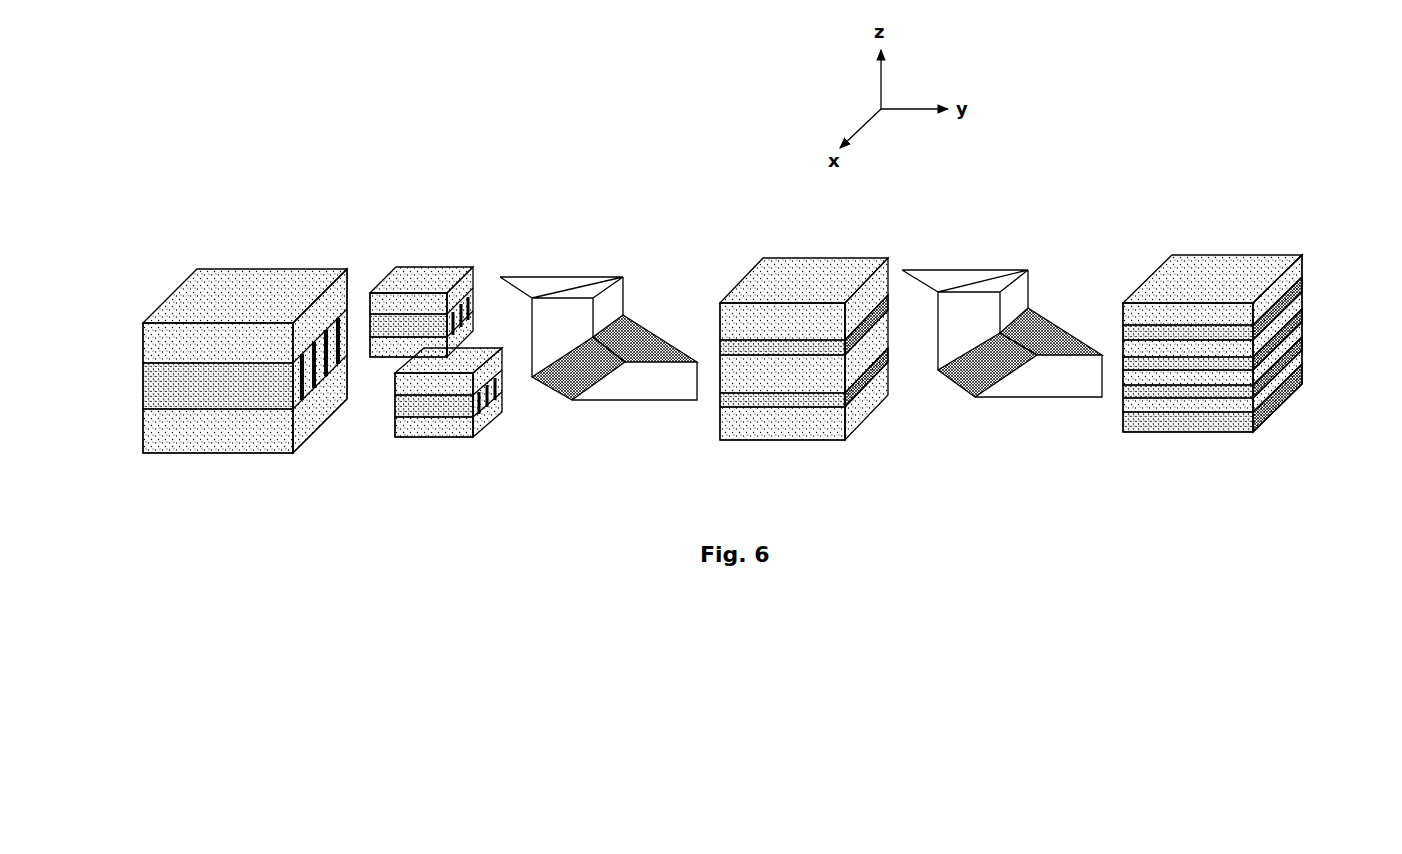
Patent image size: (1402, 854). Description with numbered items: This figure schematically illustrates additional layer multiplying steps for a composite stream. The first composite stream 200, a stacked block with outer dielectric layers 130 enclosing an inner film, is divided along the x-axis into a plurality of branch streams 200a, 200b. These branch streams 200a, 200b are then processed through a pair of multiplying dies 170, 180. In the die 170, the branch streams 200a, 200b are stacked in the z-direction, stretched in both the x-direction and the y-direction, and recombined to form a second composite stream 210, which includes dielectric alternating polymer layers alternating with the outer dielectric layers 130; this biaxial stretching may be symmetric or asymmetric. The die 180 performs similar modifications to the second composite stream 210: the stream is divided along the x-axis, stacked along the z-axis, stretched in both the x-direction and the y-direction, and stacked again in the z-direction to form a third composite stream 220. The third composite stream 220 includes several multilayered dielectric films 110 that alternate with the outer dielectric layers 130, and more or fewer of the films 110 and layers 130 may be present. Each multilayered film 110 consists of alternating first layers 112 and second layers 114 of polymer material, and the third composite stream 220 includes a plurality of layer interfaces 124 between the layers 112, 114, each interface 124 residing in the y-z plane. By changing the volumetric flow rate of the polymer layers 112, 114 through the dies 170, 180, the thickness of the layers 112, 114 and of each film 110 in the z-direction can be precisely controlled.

The first composite stream 200 is at (190, 252).
The branch stream 200a is at (436, 246).
The branch stream 200b is at (484, 450).
The outer dielectric layer 130 is at (166, 347).
The multilayered polymer composite film 110 is at (136, 386).
The layer interface 124 is at (300, 395).
The multiplying die 170 is at (650, 290).
The second composite stream 210 is at (793, 238).
The multiplying die 180 is at (1010, 250).
The third composite stream 220 is at (1198, 218).
The first layer 112 is at (1295, 393).
The second layer 114 is at (1290, 343).